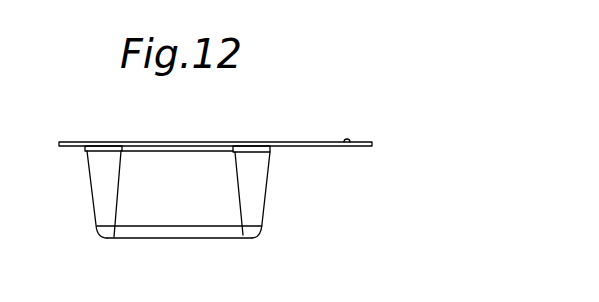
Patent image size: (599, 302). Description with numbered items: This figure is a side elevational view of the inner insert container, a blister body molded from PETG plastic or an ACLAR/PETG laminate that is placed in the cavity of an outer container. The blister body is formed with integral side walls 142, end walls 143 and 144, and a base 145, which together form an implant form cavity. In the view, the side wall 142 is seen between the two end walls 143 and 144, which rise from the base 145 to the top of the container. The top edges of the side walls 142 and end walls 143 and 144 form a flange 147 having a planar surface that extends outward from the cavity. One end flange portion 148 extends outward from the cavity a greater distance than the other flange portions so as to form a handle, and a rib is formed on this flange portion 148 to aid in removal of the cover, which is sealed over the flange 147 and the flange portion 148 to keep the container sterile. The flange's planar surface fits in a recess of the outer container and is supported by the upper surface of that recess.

The side walls 142 is at (147, 207).
The end wall 143 is at (90, 193).
The end wall 144 is at (268, 185).
The base 145 is at (212, 240).
The flange 147 is at (72, 142).
The end flange portion 148 is at (328, 142).